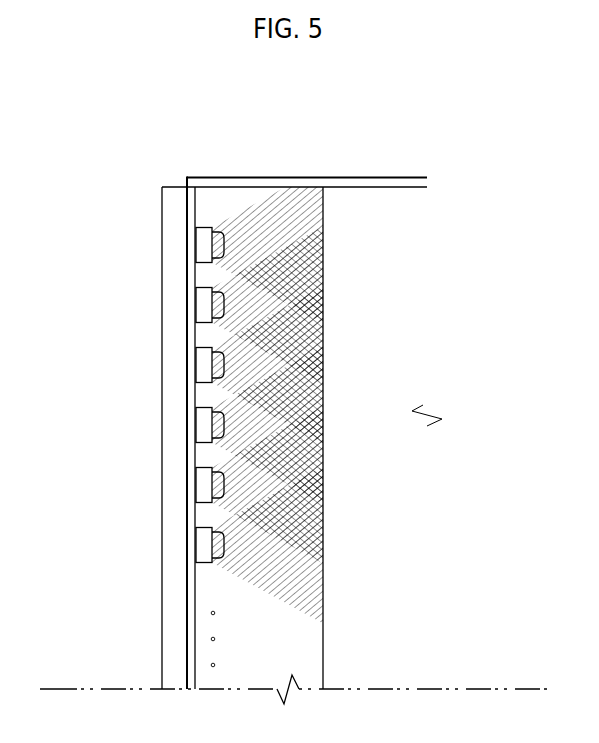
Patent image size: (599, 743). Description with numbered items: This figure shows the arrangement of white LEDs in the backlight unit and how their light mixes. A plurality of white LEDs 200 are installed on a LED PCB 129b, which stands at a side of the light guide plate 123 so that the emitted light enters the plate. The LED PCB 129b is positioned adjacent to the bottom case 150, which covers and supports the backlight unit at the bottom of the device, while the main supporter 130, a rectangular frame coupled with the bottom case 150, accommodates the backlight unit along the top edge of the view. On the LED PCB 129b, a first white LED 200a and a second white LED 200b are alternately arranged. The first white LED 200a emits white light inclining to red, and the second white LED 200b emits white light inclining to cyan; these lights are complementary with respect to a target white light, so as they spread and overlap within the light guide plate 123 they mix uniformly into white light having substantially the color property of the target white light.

The light guide plate 123 is at (402, 302).
The LED PCB 129b is at (192, 197).
The main supporter 130 is at (345, 183).
The bottom case 150 is at (177, 598).
The white LEDs 200 is at (179, 372).
The first white LED 200a is at (203, 247).
The second white LED 200b is at (202, 309).